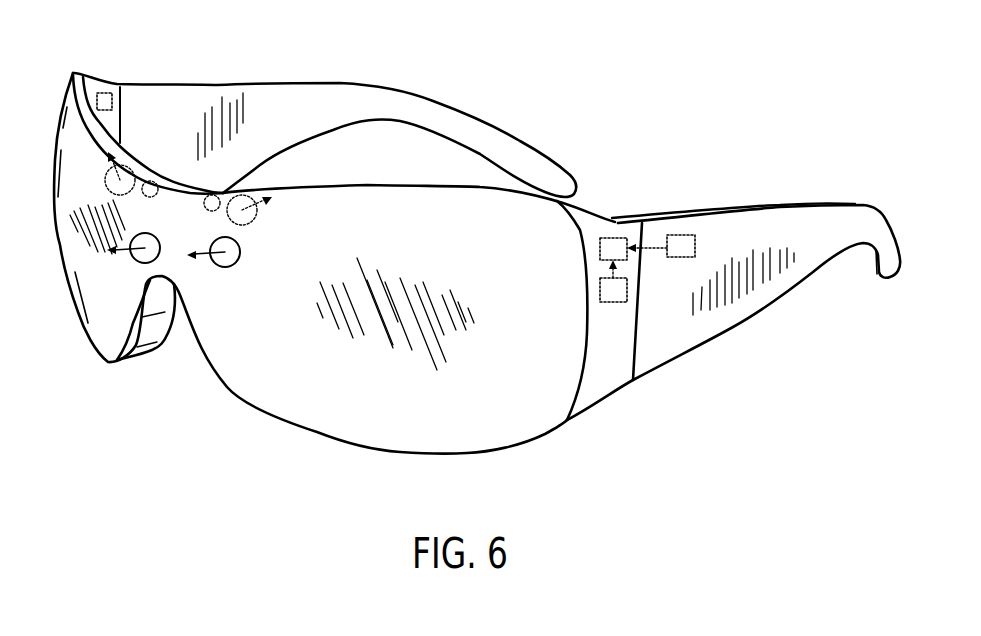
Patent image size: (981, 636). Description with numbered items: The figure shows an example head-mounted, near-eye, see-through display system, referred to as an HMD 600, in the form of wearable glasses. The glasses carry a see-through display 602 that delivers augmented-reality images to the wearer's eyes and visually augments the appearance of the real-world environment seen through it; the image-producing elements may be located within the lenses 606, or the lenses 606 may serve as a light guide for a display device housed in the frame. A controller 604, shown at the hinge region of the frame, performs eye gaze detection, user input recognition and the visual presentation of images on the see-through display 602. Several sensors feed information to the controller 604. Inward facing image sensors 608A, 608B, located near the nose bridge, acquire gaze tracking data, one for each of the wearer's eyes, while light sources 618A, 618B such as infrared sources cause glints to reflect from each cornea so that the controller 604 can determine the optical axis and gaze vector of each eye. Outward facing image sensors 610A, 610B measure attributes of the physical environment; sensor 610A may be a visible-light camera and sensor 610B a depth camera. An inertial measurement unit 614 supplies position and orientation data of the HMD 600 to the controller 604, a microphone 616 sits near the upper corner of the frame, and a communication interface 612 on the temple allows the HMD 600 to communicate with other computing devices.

The head-mounted display (HMD) 600 is at (512, 72).
The see-through display 602 is at (265, 388).
The controller 604 is at (613, 238).
The lenses 606 is at (147, 330).
The inward facing image sensor 608A is at (253, 225).
The inward facing image sensor 608B is at (127, 193).
The outward facing image sensor 610A is at (225, 267).
The outward facing image sensor 610B is at (147, 263).
The communication interface 612 is at (682, 235).
The inertial measurement unit (IMU) 614 is at (627, 288).
The microphone 616 is at (107, 90).
The light source 618A is at (210, 195).
The light source 618B is at (150, 180).